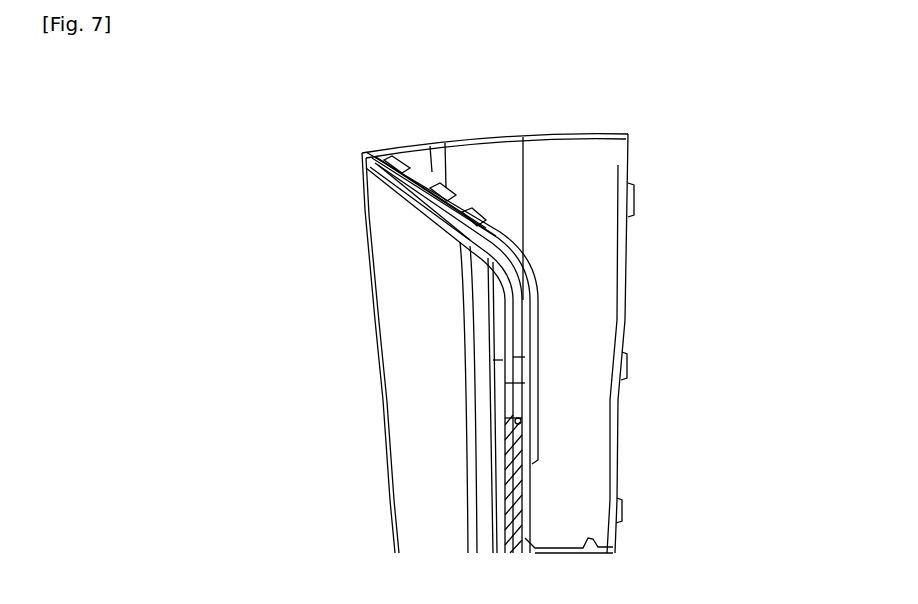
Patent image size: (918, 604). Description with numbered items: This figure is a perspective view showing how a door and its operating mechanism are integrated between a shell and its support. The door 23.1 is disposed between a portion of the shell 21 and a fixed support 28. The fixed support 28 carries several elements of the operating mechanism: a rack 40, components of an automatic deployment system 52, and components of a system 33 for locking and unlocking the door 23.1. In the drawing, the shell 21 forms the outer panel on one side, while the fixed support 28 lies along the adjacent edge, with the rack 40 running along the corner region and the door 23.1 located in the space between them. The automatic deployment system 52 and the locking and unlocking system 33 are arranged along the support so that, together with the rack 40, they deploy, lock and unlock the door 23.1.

The shell 21 is at (413, 373).
The rack 40 is at (497, 240).
The fixed support 28 is at (532, 279).
The automatic deployment system 52 is at (527, 337).
The door 23.1 is at (513, 385).
The system for locking and unlocking the door 33 is at (522, 535).